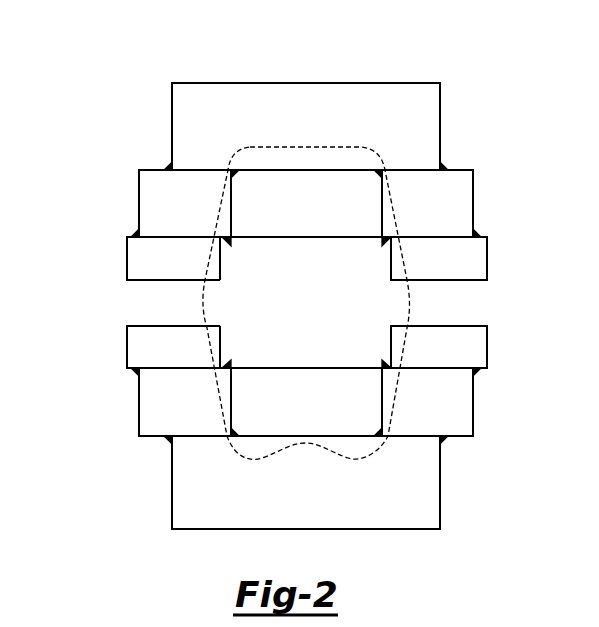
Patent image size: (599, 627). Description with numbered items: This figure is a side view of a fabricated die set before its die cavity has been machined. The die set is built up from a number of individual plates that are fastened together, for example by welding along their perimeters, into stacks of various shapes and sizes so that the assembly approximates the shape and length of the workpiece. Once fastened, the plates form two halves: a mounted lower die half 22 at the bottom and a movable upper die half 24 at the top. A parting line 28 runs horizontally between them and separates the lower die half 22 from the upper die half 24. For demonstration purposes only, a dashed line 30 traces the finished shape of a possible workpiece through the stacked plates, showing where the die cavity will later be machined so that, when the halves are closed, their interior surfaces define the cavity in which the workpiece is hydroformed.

The lower die half 22 is at (280, 427).
The upper die half 24 is at (273, 161).
The parting line 28 is at (415, 280).
The line indicating finished workpiece shape 30 is at (218, 215).